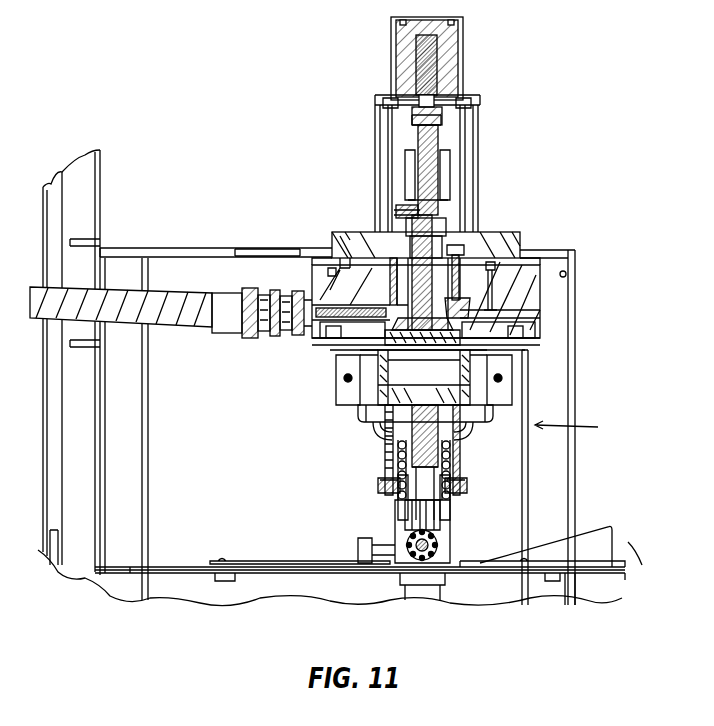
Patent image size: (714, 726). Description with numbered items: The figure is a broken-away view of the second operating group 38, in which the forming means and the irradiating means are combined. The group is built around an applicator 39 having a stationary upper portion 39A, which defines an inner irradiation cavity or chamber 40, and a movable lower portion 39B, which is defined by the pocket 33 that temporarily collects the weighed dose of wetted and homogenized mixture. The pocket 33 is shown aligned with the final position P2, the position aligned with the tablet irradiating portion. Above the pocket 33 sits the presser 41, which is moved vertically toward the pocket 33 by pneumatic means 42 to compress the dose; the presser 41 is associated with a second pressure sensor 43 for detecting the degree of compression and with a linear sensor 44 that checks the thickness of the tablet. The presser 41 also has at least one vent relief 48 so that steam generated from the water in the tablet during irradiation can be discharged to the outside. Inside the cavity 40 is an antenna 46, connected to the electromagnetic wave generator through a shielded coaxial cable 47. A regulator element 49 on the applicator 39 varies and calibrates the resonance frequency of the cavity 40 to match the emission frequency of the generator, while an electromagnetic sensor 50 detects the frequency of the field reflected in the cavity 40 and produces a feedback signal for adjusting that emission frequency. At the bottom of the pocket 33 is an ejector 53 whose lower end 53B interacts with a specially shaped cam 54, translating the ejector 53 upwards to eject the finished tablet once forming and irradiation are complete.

The second operating group 38 is at (243, 147).
The applicator 39 is at (332, 278).
The stationary upper portion 39A is at (536, 302).
The movable lower portion 39B is at (437, 374).
The irradiation cavity or chamber 40 is at (495, 302).
The presser 41 is at (412, 248).
The pneumatic means 42 is at (453, 90).
The second pressure sensor 43 is at (402, 210).
The linear sensor 44 is at (425, 69).
The antenna 46 is at (348, 338).
The shielded coaxial cable 47 is at (195, 314).
The vent relief 48 is at (440, 235).
The regulator element 49 is at (458, 262).
The electromagnetic sensor 50 is at (358, 285).
The pocket 33 is at (365, 411).
The ejector 53 is at (428, 468).
The lower end 53B is at (388, 542).
The cam 54 is at (592, 548).
The final position P2 is at (584, 431).